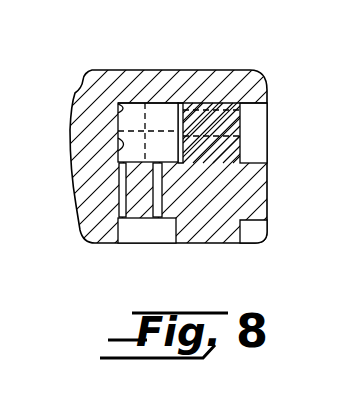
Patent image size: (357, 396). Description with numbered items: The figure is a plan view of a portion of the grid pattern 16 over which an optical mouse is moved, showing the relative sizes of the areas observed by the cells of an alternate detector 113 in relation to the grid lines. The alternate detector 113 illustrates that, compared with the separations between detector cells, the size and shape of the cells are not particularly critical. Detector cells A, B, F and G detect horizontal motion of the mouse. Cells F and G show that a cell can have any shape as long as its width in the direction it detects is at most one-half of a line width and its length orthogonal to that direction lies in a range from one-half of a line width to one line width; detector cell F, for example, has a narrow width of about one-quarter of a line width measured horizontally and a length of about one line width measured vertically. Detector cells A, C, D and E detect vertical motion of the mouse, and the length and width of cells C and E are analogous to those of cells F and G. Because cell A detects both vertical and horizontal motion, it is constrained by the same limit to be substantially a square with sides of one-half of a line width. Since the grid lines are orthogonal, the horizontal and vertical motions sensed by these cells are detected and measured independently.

The grid pattern 16 is at (93, 61).
The alternate detector 113 is at (141, 103).
The detector cell A is at (118, 109).
The detector cell B is at (159, 103).
The detector cell C is at (240, 110).
The detector cell D is at (118, 145).
The detector cell E is at (240, 139).
The detector cell F is at (95, 208).
The detector cell G is at (163, 183).